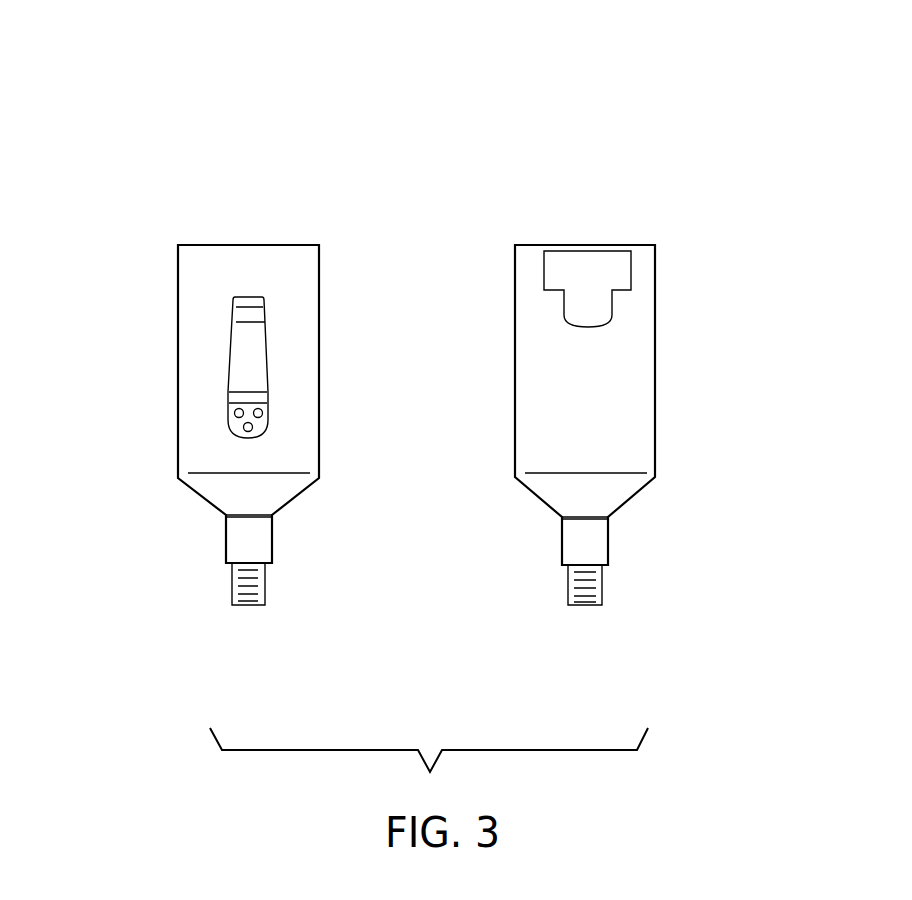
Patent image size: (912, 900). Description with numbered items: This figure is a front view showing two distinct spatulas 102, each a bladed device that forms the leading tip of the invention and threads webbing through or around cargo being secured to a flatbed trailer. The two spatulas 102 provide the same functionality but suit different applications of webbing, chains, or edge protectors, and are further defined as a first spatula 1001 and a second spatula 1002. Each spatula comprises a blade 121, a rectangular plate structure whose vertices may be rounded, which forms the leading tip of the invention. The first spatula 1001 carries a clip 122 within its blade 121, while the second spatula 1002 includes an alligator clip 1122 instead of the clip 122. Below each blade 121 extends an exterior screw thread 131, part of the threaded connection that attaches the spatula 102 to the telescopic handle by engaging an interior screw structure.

The spatula 102 is at (265, 110).
The first spatula 1001 is at (287, 245).
The second spatula 1002 is at (687, 220).
The blade 121 is at (188, 455).
The clip 122 is at (237, 340).
The exterior screw thread 131 is at (238, 582).
The alligator clip 1122 is at (612, 275).